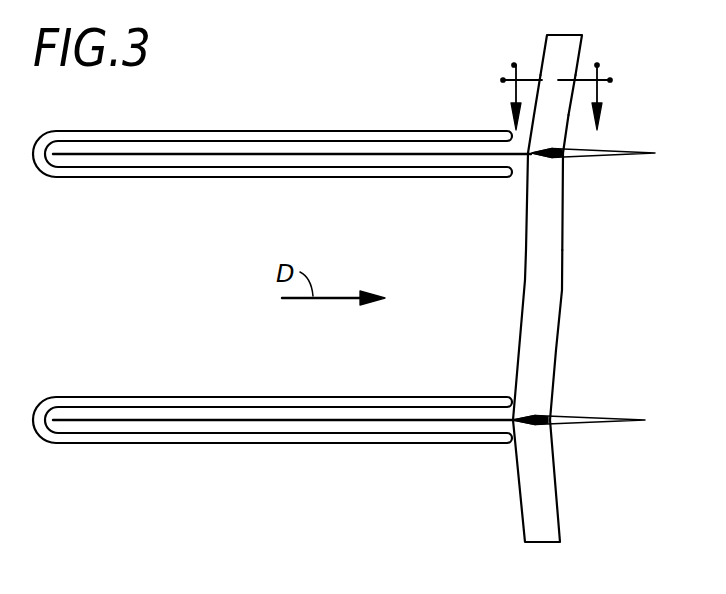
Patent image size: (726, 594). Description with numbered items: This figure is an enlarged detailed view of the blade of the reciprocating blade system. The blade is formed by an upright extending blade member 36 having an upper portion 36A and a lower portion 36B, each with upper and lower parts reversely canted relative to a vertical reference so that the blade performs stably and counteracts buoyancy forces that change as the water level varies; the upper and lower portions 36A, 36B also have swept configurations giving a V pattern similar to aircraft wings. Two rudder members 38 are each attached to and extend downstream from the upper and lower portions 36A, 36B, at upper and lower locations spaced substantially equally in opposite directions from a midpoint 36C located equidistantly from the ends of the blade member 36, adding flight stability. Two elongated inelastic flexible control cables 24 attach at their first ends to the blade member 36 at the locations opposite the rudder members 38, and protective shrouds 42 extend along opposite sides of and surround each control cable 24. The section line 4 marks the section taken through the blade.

The blade member 36 is at (585, 275).
The upper portion 36A is at (562, 210).
The lower portion 36B is at (558, 477).
The midpoint 36C is at (562, 308).
The rudder member 38 is at (609, 148).
The protective shroud 42 is at (152, 178).
The control cable 24 is at (268, 156).
The section line 4- 4 is at (554, 92).